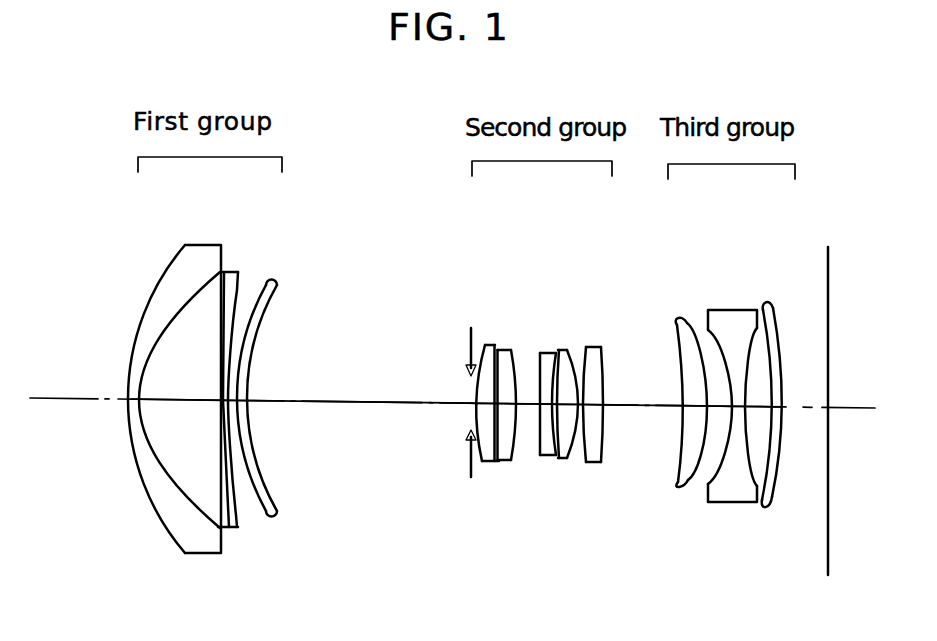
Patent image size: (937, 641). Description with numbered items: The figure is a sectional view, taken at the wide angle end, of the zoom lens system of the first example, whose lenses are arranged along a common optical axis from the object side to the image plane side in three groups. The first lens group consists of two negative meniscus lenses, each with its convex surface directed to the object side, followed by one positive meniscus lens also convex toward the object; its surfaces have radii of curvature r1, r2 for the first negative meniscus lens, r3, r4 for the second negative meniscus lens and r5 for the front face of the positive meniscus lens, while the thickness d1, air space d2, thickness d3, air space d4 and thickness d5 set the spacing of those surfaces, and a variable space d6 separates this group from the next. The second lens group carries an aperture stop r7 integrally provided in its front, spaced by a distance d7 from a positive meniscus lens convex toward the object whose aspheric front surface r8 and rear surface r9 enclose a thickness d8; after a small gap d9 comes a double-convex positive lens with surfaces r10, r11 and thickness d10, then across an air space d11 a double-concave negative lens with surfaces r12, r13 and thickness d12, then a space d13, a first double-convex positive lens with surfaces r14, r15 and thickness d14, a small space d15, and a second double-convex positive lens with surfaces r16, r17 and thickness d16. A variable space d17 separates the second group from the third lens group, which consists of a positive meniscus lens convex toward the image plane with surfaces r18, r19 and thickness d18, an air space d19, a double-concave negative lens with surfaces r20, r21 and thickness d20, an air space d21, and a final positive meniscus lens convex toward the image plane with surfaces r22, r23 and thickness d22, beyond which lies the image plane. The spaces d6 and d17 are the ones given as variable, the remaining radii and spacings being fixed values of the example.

The radius of curvature of first lens surface r1 is at (153, 299).
The radius of curvature of second lens surface r2 is at (185, 298).
The radius of curvature of third lens surface r3 is at (226, 287).
The radius of curvature of fourth lens surface r4 is at (235, 290).
The radius of curvature of fifth lens surface r5 is at (279, 290).
The space between first and second lens surfaces d1 is at (132, 425).
The space between second and third lens surfaces d2 is at (190, 401).
The space between third and fourth lens surfaces d3 is at (224, 529).
The space between fourth and fifth lens surfaces d4 is at (240, 482).
The space between fifth and sixth lens surfaces d5 is at (254, 437).
The variable space between first and second lens groups d6 is at (351, 404).
The aperture stop r7 is at (471, 343).
The radius of curvature of eighth lens surface r8 is at (483, 346).
The radius of curvature of ninth lens surface r9 is at (492, 347).
The radius of curvature of tenth lens surface r10 is at (514, 350).
The radius of curvature of eleventh lens surface r11 is at (524, 470).
The radius of curvature of twelfth lens surface r12 is at (541, 357).
The radius of curvature of thirteenth lens surface r13 is at (556, 360).
The radius of curvature of fourteenth lens surface r14 is at (578, 348).
The radius of curvature of fifteenth lens surface r15 is at (584, 352).
The radius of curvature of sixteenth lens surface r16 is at (600, 350).
The radius of curvature of seventeenth lens surface r17 is at (604, 360).
The space between aperture stop and eighth lens surface d7 is at (468, 417).
The space between eighth and ninth lens surfaces d8 is at (485, 462).
The space between ninth and tenth lens surfaces d9 is at (503, 463).
The space between tenth and eleventh lens surfaces d10 is at (524, 470).
The space between eleventh and twelfth lens surfaces d11 is at (545, 462).
The space between twelfth and thirteenth lens surfaces d12 is at (565, 466).
The space between thirteenth and fourteenth lens surfaces d13 is at (570, 463).
The space between fourteenth and fifteenth lens surfaces d14 is at (585, 468).
The space between fifteenth and sixteenth lens surfaces d15 is at (598, 455).
The space between sixteenth and seventeenth lens surfaces d16 is at (605, 466).
The variable space between second and third lens groups d17 is at (645, 408).
The radius of curvature of eighteenth lens surface r18 is at (676, 324).
The radius of curvature of nineteenth lens surface r19 is at (688, 323).
The radius of curvature of twentieth lens surface r20 is at (720, 310).
The radius of curvature of twenty-first lens surface r21 is at (743, 320).
The radius of curvature of twenty-second lens surface r22 is at (770, 303).
The radius of curvature of twenty-third lens surface r23 is at (778, 337).
The space between eighteenth and nineteenth lens surfaces d18 is at (690, 478).
The space between nineteenth and twentieth lens surfaces d19 is at (699, 483).
The space between twentieth and twenty-first lens surfaces d20 is at (730, 502).
The space between twenty-first and twenty-second lens surfaces d21 is at (758, 502).
The space between twenty-second and twenty-third lens surfaces d22 is at (783, 422).